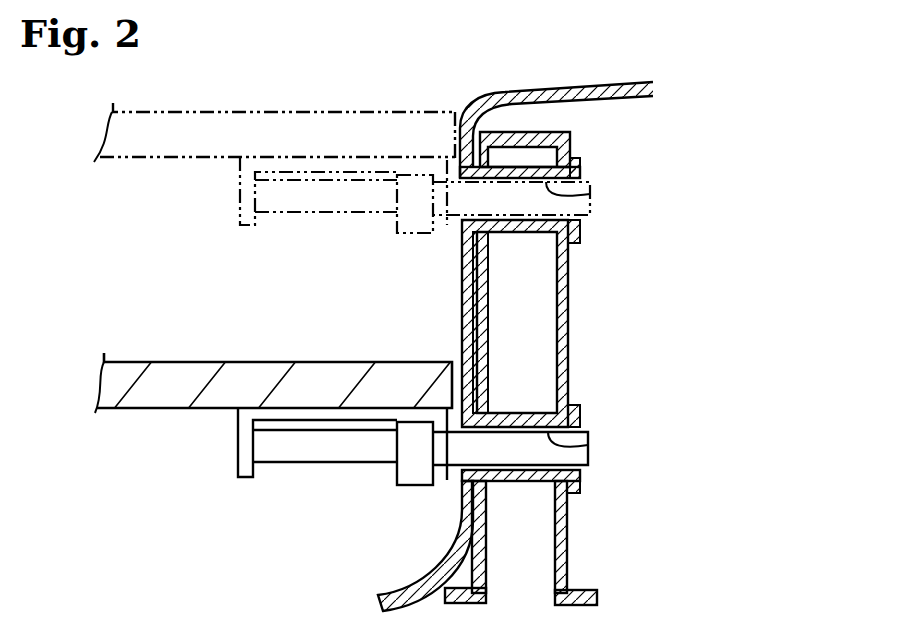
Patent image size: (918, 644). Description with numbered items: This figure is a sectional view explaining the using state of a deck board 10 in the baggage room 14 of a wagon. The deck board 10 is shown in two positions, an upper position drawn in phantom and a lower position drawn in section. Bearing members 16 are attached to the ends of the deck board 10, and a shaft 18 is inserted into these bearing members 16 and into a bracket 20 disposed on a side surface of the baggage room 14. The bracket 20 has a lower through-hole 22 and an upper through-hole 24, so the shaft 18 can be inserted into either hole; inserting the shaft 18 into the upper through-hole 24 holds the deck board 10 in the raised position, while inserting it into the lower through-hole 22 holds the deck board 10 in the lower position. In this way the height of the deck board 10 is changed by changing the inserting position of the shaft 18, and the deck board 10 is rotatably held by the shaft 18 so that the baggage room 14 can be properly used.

The deck board 10 is at (292, 110).
The baggage room 14 is at (167, 314).
The bearing member 16 is at (246, 228).
The shaft 18 is at (339, 213).
The bracket 20 is at (564, 312).
The lower through-hole 22 is at (588, 440).
The upper through-hole 24 is at (647, 194).